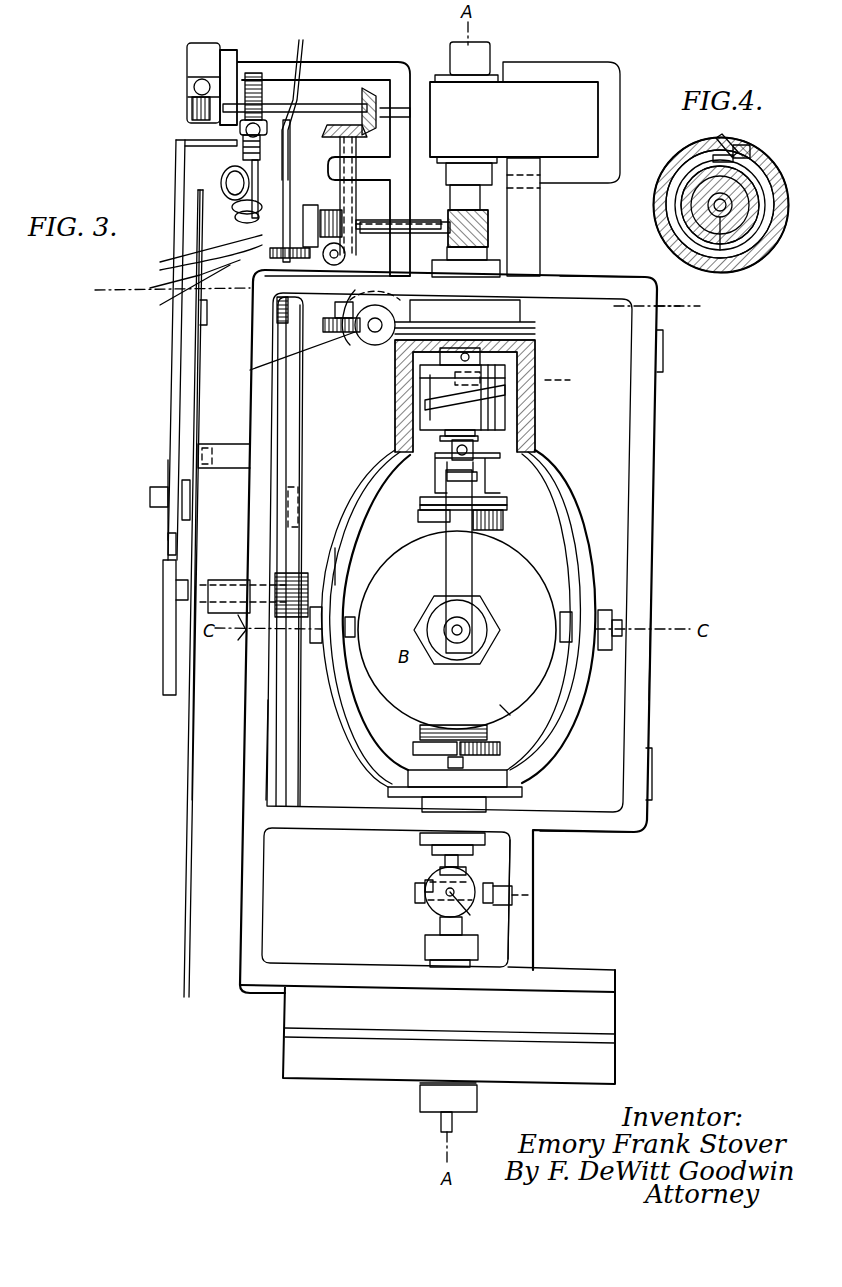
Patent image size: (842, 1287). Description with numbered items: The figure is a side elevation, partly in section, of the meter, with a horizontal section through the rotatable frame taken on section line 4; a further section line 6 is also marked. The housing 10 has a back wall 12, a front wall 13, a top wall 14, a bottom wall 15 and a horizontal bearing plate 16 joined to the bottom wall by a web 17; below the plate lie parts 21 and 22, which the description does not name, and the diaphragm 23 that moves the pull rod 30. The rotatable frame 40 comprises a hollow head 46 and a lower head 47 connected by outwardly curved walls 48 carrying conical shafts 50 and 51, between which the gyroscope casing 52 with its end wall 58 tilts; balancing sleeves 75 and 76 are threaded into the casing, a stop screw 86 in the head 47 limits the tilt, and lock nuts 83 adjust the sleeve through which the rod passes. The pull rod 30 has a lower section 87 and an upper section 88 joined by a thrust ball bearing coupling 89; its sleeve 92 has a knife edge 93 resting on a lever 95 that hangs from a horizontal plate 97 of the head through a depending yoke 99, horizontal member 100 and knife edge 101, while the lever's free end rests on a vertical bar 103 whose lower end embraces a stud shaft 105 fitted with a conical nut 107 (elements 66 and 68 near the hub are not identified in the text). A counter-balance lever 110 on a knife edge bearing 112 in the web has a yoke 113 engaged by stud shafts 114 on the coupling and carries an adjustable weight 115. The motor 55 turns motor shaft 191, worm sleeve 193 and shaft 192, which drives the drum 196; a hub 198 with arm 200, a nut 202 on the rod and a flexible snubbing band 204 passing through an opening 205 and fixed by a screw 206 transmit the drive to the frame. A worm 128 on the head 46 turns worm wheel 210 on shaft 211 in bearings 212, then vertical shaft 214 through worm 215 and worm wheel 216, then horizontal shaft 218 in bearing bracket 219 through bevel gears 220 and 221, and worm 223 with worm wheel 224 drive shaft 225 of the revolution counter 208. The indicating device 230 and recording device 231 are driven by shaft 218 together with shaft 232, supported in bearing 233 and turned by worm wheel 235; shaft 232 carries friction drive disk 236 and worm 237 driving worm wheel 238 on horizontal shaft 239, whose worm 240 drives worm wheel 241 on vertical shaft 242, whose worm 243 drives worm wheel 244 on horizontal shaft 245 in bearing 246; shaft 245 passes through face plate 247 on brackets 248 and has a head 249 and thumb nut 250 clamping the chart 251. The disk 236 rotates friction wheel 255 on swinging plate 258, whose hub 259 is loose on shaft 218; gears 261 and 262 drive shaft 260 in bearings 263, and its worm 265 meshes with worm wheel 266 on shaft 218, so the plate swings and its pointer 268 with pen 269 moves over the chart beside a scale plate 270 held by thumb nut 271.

In FIG. 3, the section line 4— 4 is at (398, 376).
In FIG. 3, the section line 6- 6 is at (384, 299).
In FIG. 4, the section line 6- 6 is at (669, 306).
In FIG. 3, the housing 10 is at (270, 290).
In FIG. 3, the back wall 12 is at (650, 470).
In FIG. 3, the front wall 13 is at (262, 750).
In FIG. 3, the top wall 14 is at (598, 272).
In FIG. 3, the bottom wall 15 is at (590, 826).
In FIG. 3, the horizontal bearing plate 16 is at (576, 968).
In FIG. 3, the web 17 is at (525, 935).
In FIG. 3, the base plate 21 is at (292, 1016).
In FIG. 3, the lower base plate 22 is at (292, 1056).
In FIG. 3, the diaphragm 23 is at (612, 1040).
In FIG. 3, the pull rod 30 is at (442, 1122).
In FIG. 4, the pull rod 30 is at (714, 206).
In FIG. 3, the rotatable frame 40 is at (390, 785).
In FIG. 4, the rotatable frame 40 is at (672, 175).
In FIG. 3, the head 46 is at (538, 345).
In FIG. 4, the head 46 is at (776, 250).
In FIG. 3, the lower head 47 is at (507, 780).
In FIG. 3, the outwardly curved walls 48 is at (348, 741).
In FIG. 3, the conical shaft 50 is at (333, 660).
In FIG. 3, the conical shaft 51 is at (605, 610).
In FIG. 3, the gyroscope casing 52 is at (398, 555).
In FIG. 3, the motor 55 is at (525, 82).
In FIG. 3, the end wall 58 is at (505, 708).
In FIG. 3, the hub nut 66 is at (484, 622).
In FIG. 3, the hub flange 68 is at (501, 628).
In FIG. 3, the sleeve 75 is at (425, 515).
In FIG. 3, the sleeve 76 is at (422, 732).
In FIG. 3, the lock nuts 83 is at (478, 842).
In FIG. 3, the stop screw 86 is at (492, 760).
In FIG. 3, the lower section of pull rod 87 is at (440, 940).
In FIG. 3, the upper section of pull rod 88 is at (466, 866).
In FIG. 3, the thrust ball bearing coupling 89 is at (425, 896).
In FIG. 3, the sleeve 92 is at (452, 458).
In FIG. 3, the knife edge 93 is at (448, 478).
In FIG. 3, the lever 95 is at (503, 520).
In FIG. 3, the horizontal plate 97 is at (500, 465).
In FIG. 3, the depending yoke 99 is at (507, 495).
In FIG. 3, the horizontal member 100 is at (425, 505).
In FIG. 3, the knife edge 101 is at (447, 482).
In FIG. 3, the vertical bar 103 is at (470, 548).
In FIG. 3, the stud shaft 105 is at (453, 628).
In FIG. 3, the conical nut 107 is at (467, 640).
In FIG. 3, the counter-balance lever 110 is at (470, 908).
In FIG. 3, the knife edge bearing 112 is at (515, 900).
In FIG. 3, the yoke 113 is at (435, 880).
In FIG. 3, the stud shafts 114 is at (418, 890).
In FIG. 3, the adjustable weight 115 is at (442, 920).
In FIG. 3, the worm 128 is at (538, 327).
In FIG. 3, the motor shaft 191 is at (476, 207).
In FIG. 3, the shaft 192 is at (450, 358).
In FIG. 3, the worm sleeve 193 is at (450, 214).
In FIG. 3, the drum 196 is at (520, 428).
In FIG. 4, the drum 196 is at (728, 245).
In FIG. 3, the hub 198 is at (522, 442).
In FIG. 3, the arm 200 is at (420, 445).
In FIG. 4, the arm 200 is at (713, 158).
In FIG. 4, the nut 202 is at (718, 220).
In FIG. 3, the flexible snubbing band 204 is at (508, 398).
In FIG. 4, the flexible snubbing band 204 is at (752, 155).
In FIG. 4, the opening 205 is at (765, 160).
In FIG. 4, the screw 206 is at (745, 138).
In FIG. 3, the revolution counter 208 is at (187, 56).
In FIG. 3, the worm wheel 210 is at (372, 345).
In FIG. 3, the shaft 211 is at (350, 345).
In FIG. 3, the bearings 212 is at (443, 280).
In FIG. 3, the vertical shaft 214 is at (345, 334).
In FIG. 3, the worm 215 is at (365, 348).
In FIG. 3, the worm wheel 216 is at (335, 325).
In FIG. 3, the horizontal shaft 218 is at (192, 110).
In FIG. 3, the bearing bracket 219 is at (228, 85).
In FIG. 3, the bevel gear 220 is at (330, 146).
In FIG. 3, the bevel gear 221 is at (363, 100).
In FIG. 3, the worm 223 is at (200, 121).
In FIG. 3, the worm wheel 224 is at (190, 92).
In FIG. 3, the shaft 225 is at (194, 85).
In FIG. 3, the indicating device 230 is at (178, 156).
In FIG. 3, the recording device 231 is at (196, 200).
In FIG. 3, the shaft 232 is at (440, 224).
In FIG. 3, the bearing 233 is at (310, 206).
In FIG. 3, the worm wheel 235 is at (540, 190).
In FIG. 3, the friction drive disk 236 is at (290, 145).
In FIG. 3, the worm 237 is at (330, 212).
In FIG. 3, the worm wheel 238 is at (375, 214).
In FIG. 3, the horizontal shaft 239 is at (372, 250).
In FIG. 3, the worm 240 is at (330, 288).
In FIG. 3, the worm wheel 241 is at (268, 255).
In FIG. 3, the vertical shaft 242 is at (300, 410).
In FIG. 3, the worm 243 is at (333, 545).
In FIG. 3, the worm wheel 244 is at (302, 505).
In FIG. 3, the horizontal shaft 245 is at (272, 575).
In FIG. 3, the bearing 246 is at (232, 578).
In FIG. 3, the face plate 247 is at (230, 540).
In FIG. 3, the brackets 248 is at (226, 444).
In FIG. 3, the head 249 is at (240, 632).
In FIG. 3, the thumb nut 250 is at (178, 600).
In FIG. 3, the chart 251 is at (204, 345).
In FIG. 3, the friction wheel 255 is at (228, 182).
In FIG. 3, the swinging plate 258 is at (290, 60).
In FIG. 3, the hub 259 is at (303, 60).
In FIG. 3, the shaft 260 is at (245, 222).
In FIG. 3, the gear 261 is at (194, 260).
In FIG. 3, the gear 262 is at (183, 281).
In FIG. 3, the bearings 263 is at (178, 294).
In FIG. 3, the worm 265 is at (178, 140).
In FIG. 3, the worm wheel 266 is at (256, 72).
In FIG. 3, the pointer 268 is at (170, 405).
In FIG. 3, the pen 269 is at (170, 560).
In FIG. 3, the scale plate 270 is at (165, 650).
In FIG. 3, the thumb nut 271 is at (155, 507).